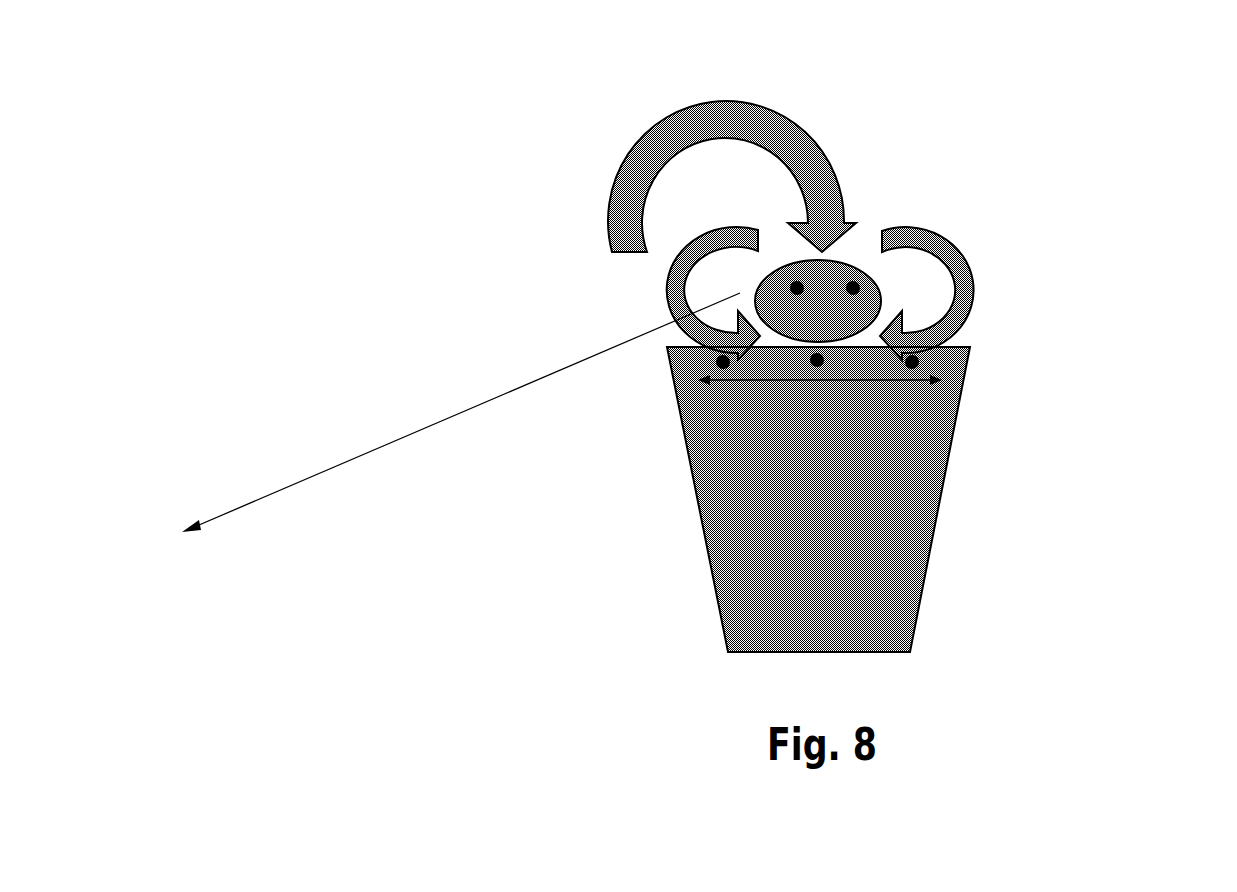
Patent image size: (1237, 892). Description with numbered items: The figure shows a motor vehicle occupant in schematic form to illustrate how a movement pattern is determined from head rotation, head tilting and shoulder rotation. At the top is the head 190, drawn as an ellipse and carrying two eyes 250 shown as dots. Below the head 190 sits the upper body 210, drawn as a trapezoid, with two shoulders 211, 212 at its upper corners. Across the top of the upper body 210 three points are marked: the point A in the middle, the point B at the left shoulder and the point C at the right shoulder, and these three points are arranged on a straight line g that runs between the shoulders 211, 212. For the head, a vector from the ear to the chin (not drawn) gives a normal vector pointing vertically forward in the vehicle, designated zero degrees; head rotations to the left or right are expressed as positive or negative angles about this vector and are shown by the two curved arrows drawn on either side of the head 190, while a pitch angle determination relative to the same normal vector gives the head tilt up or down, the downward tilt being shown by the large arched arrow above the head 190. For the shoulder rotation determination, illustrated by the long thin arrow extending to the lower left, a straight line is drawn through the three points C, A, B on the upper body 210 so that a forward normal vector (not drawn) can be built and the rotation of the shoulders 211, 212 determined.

The upper body 210 is at (968, 447).
The shoulder 211 is at (968, 368).
The shoulder 212 is at (670, 348).
The eyes 250 is at (797, 288).
The head 190 is at (856, 283).
The middle point A is at (817, 360).
The left shoulder point B is at (912, 362).
The right shoulder point C is at (723, 362).
The straight line g is at (855, 380).